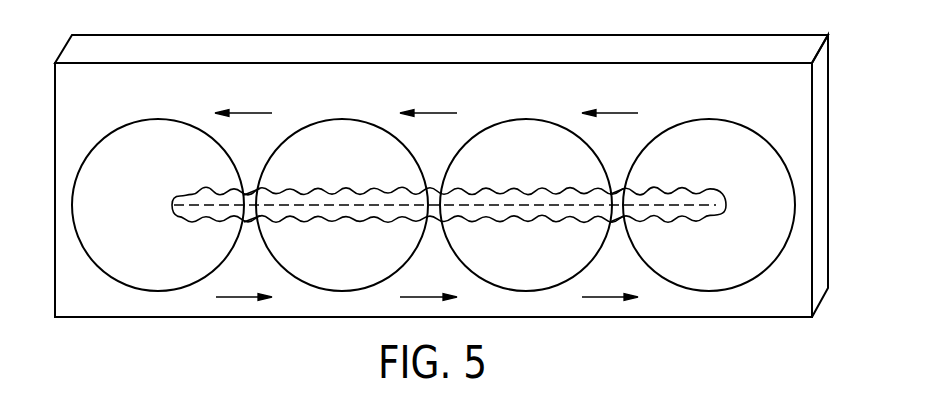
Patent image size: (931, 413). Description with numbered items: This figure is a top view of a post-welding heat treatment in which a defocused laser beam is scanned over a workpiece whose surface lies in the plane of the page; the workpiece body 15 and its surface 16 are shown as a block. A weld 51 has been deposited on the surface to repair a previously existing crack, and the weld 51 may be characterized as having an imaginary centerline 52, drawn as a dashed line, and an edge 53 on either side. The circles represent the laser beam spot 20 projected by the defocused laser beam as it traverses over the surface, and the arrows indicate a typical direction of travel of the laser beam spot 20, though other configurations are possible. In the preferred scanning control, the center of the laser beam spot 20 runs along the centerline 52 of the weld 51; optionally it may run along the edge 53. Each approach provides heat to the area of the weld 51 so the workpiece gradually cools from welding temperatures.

The substrate side / layer 15 is at (822, 174).
The substrate surface 16 is at (779, 105).
The laser beam spot 20 is at (109, 133).
The weld 51 is at (617, 226).
The centerline 52 is at (378, 205).
The edge 53 is at (435, 225).